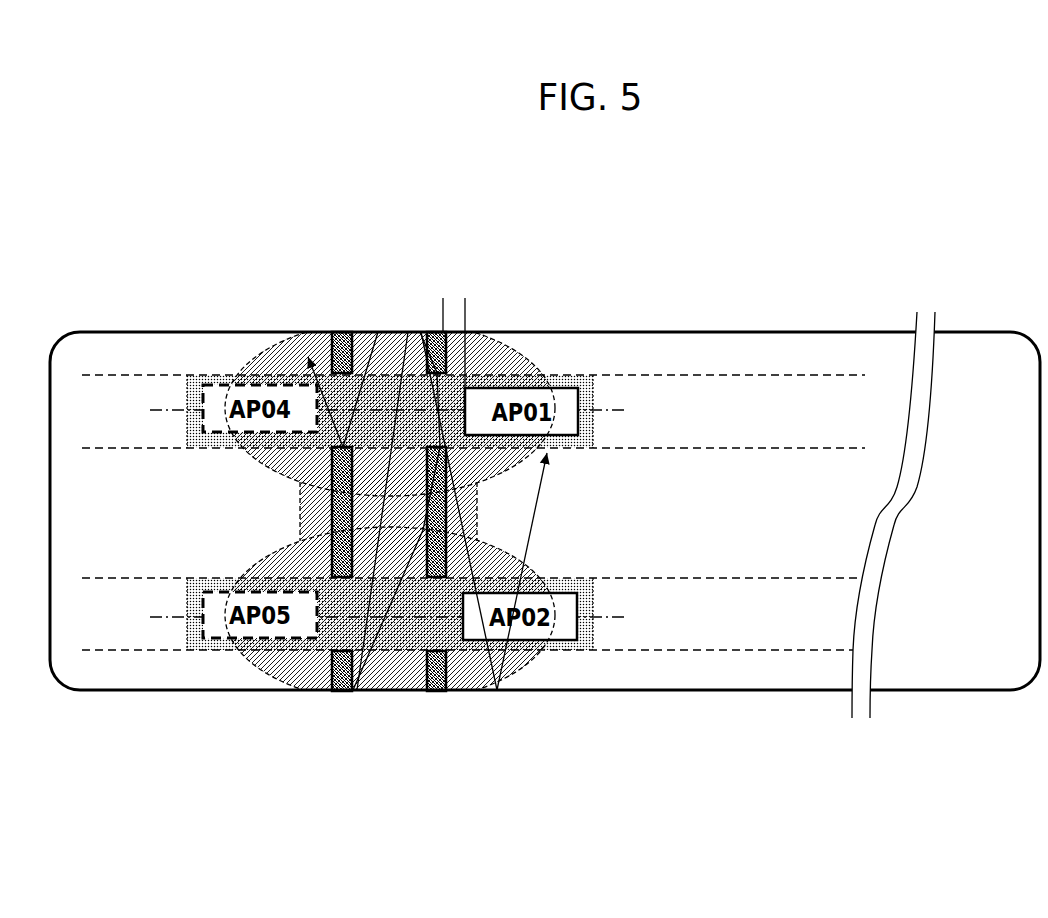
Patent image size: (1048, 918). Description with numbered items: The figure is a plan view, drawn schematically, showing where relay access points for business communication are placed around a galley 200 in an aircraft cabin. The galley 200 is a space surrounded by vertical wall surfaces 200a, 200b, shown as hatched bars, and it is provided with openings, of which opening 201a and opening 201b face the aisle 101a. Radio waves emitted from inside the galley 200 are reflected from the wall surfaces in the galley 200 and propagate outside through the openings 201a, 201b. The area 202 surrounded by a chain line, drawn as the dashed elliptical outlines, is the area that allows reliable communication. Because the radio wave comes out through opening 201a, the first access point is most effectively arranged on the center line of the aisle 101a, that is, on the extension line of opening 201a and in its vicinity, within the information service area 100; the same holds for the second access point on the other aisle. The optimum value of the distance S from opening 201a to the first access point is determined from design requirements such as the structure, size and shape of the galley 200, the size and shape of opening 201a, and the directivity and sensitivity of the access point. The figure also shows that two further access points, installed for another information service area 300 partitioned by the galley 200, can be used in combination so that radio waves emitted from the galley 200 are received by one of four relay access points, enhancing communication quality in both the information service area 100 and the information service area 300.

The information service area 100 is at (742, 355).
The aisle 101a is at (785, 405).
The information service area 300 is at (137, 350).
The galley 200 is at (390, 680).
The vertical wall surface 200a is at (433, 332).
The vertical wall surface 200b is at (342, 332).
The opening 201a is at (458, 378).
The opening 201b is at (327, 425).
The area 202 is at (545, 372).
The distance S is at (503, 310).